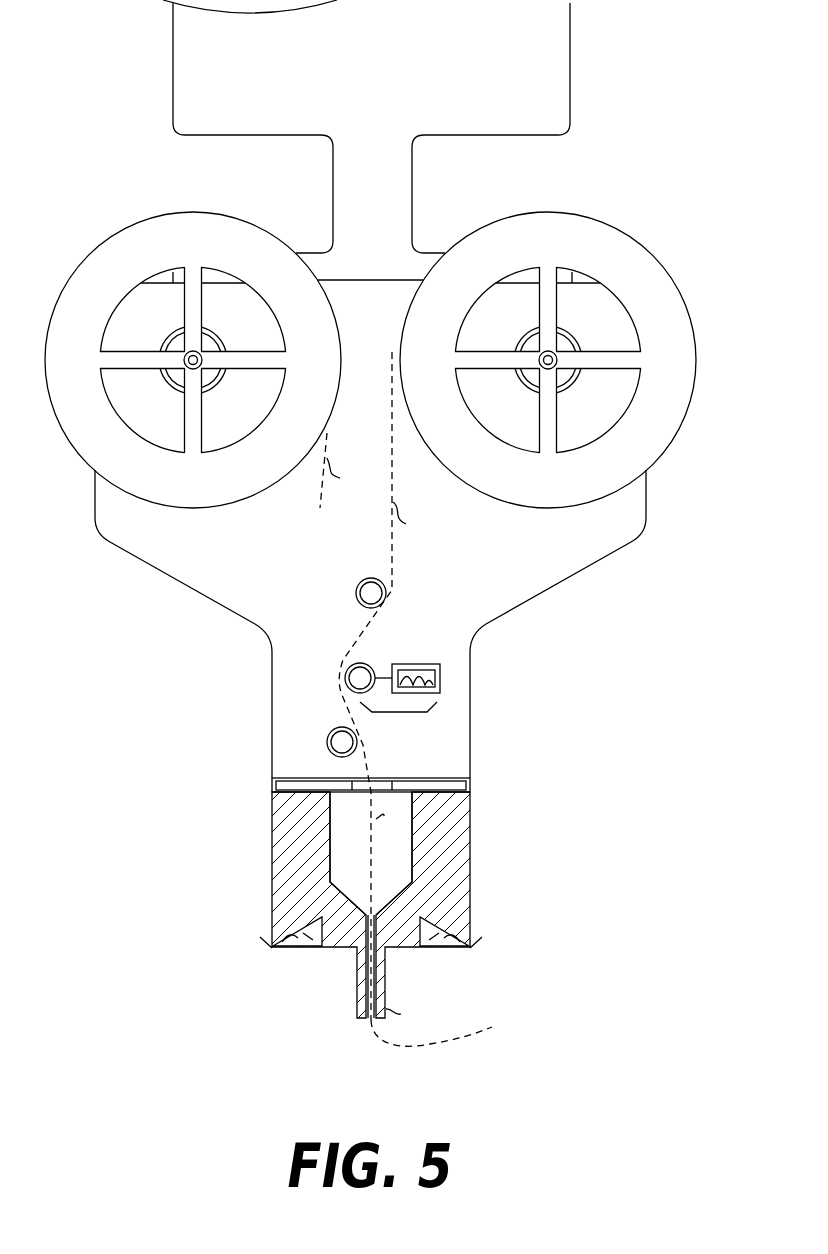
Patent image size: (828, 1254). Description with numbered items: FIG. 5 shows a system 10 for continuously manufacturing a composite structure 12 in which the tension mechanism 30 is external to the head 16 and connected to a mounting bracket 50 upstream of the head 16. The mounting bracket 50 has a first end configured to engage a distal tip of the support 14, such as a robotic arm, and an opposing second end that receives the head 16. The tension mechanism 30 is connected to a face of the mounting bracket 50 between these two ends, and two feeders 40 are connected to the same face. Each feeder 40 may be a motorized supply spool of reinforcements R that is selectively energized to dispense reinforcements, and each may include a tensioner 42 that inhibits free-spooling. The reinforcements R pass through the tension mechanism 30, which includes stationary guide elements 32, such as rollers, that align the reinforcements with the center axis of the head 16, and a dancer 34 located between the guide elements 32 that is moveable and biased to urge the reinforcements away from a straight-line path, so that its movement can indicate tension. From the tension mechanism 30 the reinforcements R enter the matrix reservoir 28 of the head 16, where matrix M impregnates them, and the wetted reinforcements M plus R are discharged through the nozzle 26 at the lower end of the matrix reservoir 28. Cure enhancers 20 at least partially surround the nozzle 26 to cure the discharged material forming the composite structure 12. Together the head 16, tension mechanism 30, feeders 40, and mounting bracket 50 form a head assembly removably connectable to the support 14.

The system 10 is at (110, 1018).
The composite structure 12 is at (484, 1033).
The support 14 is at (371, 112).
The head 16 is at (347, 898).
The cure enhancers 20 is at (300, 949).
The nozzle 26 is at (385, 979).
The matrix reservoir 28 is at (380, 871).
The tension mechanism 30 is at (433, 613).
The guide elements 32 is at (357, 597).
The dancer 34 is at (401, 714).
The feeder 40 is at (181, 494).
The tensioner 42 is at (207, 344).
The mounting bracket 50 is at (285, 564).